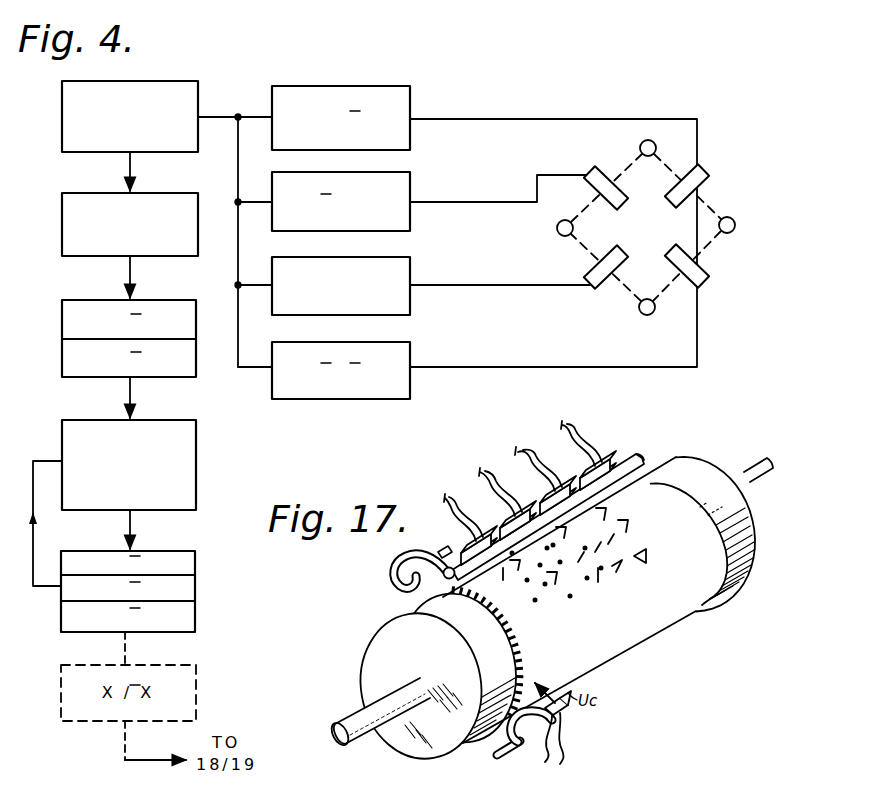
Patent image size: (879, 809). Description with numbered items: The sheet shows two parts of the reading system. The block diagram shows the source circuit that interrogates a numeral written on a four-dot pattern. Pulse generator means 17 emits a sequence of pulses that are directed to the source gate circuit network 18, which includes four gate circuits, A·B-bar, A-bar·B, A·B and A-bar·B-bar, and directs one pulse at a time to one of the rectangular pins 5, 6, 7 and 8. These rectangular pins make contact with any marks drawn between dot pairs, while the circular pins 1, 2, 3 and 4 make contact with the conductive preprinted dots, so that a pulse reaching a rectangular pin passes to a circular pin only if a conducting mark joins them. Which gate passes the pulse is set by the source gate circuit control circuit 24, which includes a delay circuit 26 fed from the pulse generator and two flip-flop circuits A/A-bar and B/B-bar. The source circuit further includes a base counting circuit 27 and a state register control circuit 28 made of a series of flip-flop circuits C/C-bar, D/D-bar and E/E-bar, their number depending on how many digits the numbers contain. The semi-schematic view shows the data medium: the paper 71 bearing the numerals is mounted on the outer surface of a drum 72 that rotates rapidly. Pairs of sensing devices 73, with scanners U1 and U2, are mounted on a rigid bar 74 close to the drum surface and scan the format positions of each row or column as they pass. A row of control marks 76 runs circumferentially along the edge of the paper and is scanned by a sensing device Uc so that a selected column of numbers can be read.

In FIG. 4, the pulse generator means 17 is at (150, 81).
In FIG. 4, the delay circuit 26 is at (150, 193).
In FIG. 4, the source gate circuit control circuit 24 is at (168, 296).
In FIG. 4, the base counting circuit 27 is at (150, 420).
In FIG. 4, the state register control circuit 28 is at (177, 550).
In FIG. 4, the source gate circuit network 18 is at (422, 104).
In FIG. 4, the circular pin 1 is at (560, 222).
In FIG. 4, the circular pin 2 is at (654, 142).
In FIG. 4, the circular pin 3 is at (733, 219).
In FIG. 4, the circular pin 4 is at (654, 310).
In FIG. 4, the rectangular pin 5 is at (626, 246).
In FIG. 4, the rectangular pin 6 is at (620, 206).
In FIG. 4, the rectangular pin 7 is at (672, 202).
In FIG. 4, the rectangular pin 8 is at (671, 250).
In FIG. 17, the paper 71 is at (682, 594).
In FIG. 17, the drum 72 is at (695, 470).
In FIG. 17, the sensing devices 73 is at (481, 480).
In FIG. 17, the rigid bar 74 is at (645, 468).
In FIG. 17, the control marks 76 is at (490, 617).